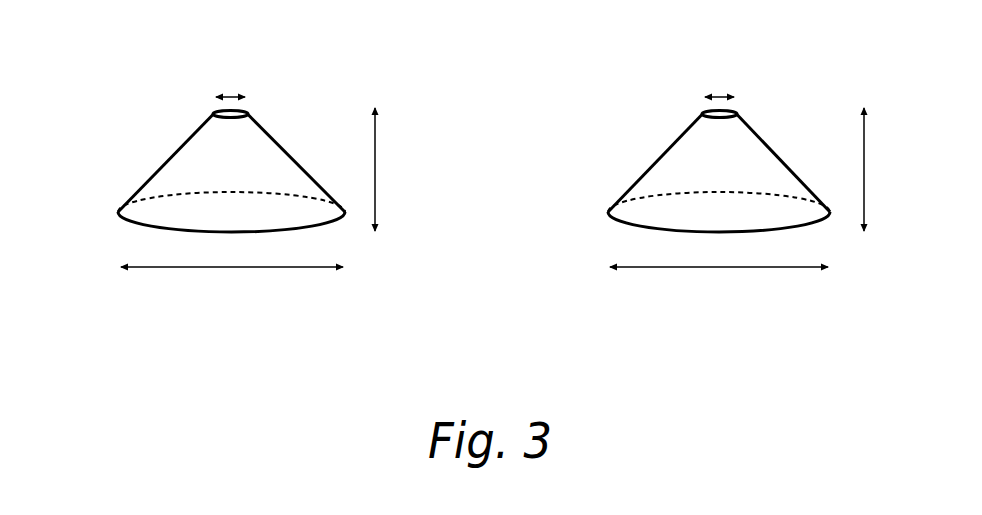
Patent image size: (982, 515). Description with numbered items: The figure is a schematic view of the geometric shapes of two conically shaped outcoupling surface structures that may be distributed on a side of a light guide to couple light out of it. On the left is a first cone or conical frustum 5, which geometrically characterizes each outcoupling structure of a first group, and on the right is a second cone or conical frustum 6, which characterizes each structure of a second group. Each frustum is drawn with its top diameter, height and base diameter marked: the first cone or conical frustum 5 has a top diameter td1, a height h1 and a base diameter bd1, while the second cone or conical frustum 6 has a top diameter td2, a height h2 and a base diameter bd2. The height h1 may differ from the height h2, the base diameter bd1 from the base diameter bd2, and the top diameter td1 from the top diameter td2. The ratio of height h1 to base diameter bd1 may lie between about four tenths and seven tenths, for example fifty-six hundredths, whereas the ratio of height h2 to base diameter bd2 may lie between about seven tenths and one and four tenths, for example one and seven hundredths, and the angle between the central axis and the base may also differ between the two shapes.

The first cone or conical frustum 5 is at (128, 87).
The second cone or conical frustum 6 is at (617, 87).
The top diameter td1 is at (233, 79).
The height h1 is at (400, 169).
The base diameter bd1 is at (232, 292).
The top diameter td2 is at (722, 79).
The height h2 is at (889, 169).
The base diameter bd2 is at (719, 292).